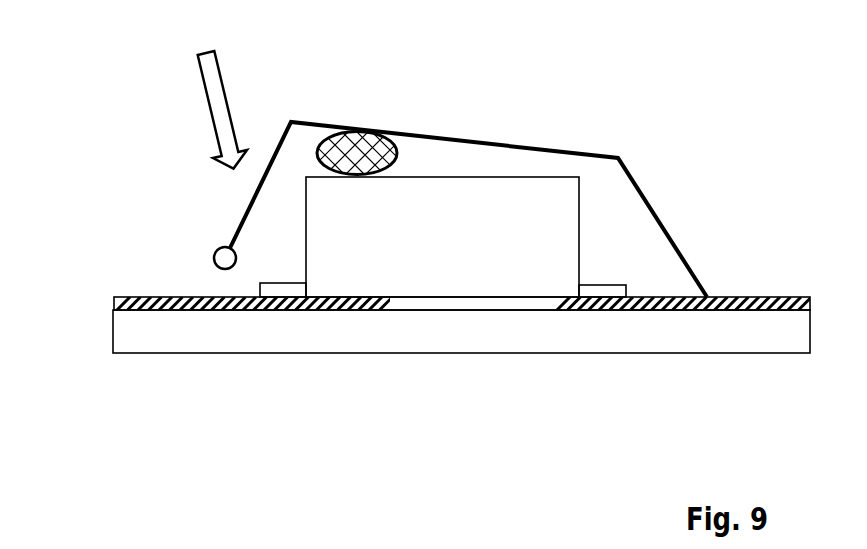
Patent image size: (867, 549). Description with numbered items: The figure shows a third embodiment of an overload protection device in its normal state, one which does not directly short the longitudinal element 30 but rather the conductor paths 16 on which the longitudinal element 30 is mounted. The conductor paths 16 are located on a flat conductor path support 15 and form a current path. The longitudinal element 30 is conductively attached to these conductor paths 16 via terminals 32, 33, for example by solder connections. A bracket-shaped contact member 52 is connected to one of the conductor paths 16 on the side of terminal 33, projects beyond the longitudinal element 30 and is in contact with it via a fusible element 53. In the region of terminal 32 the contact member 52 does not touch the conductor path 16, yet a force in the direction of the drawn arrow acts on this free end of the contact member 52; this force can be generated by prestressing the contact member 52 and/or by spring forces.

The conductor path support 15 is at (178, 332).
The conductor paths 16 is at (780, 297).
The longitudinal element 30 is at (510, 222).
The terminal 32 is at (286, 283).
The terminal 33 is at (613, 283).
The contact member 52 is at (583, 150).
The fusible element 53 is at (350, 140).